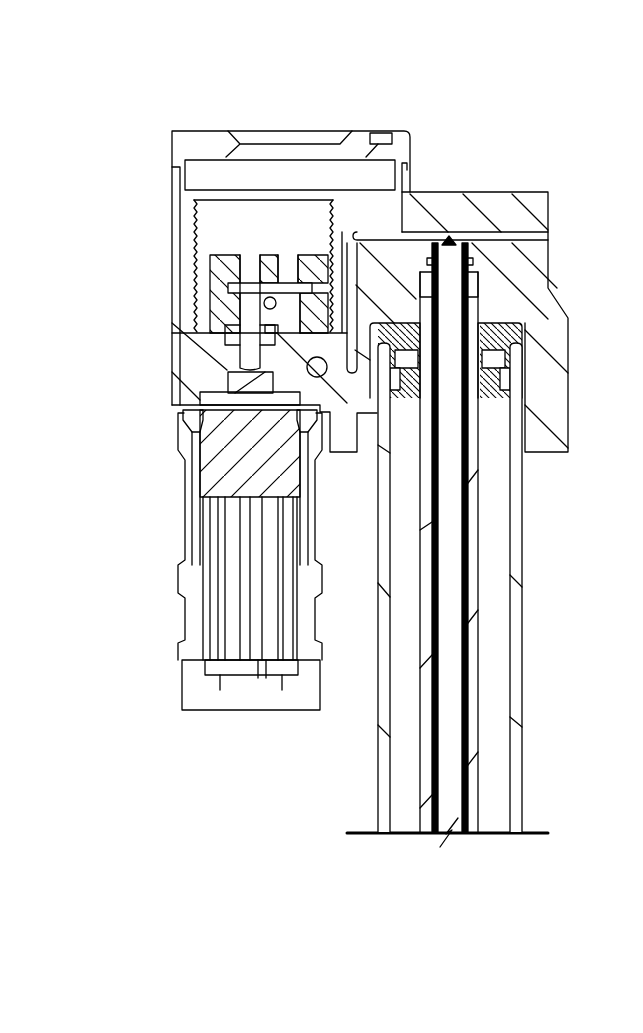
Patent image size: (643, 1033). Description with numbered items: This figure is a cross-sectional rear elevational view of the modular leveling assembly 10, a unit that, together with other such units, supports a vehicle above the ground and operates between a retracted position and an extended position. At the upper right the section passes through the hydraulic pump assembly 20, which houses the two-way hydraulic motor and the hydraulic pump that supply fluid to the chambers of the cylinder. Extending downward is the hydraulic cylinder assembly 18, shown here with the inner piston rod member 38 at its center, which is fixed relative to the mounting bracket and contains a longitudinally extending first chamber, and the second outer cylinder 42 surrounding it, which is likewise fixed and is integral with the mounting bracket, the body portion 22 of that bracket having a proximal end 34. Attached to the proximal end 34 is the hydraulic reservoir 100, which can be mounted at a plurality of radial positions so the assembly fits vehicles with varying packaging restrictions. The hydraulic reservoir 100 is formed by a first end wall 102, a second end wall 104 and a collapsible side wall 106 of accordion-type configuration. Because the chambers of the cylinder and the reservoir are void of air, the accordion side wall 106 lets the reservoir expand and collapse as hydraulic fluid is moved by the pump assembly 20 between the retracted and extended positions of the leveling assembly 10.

The modular leveling assembly 10 is at (474, 97).
The hydraulic cylinder assembly 18 is at (527, 702).
The hydraulic pump assembly 20 is at (566, 272).
The body portion 22 is at (520, 640).
The proximal end 34 is at (520, 393).
The inner piston rod member 38 is at (478, 529).
The second outer cylinder 42 is at (515, 747).
The hydraulic reservoir 100 is at (168, 260).
The first end wall 102 is at (222, 196).
The second end wall 104 is at (203, 332).
The collapsible side wall 106 is at (196, 232).